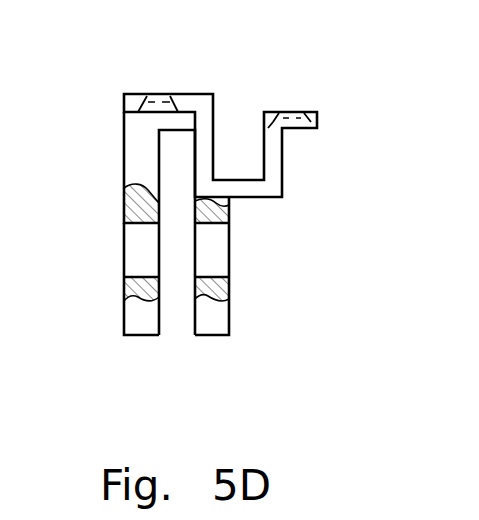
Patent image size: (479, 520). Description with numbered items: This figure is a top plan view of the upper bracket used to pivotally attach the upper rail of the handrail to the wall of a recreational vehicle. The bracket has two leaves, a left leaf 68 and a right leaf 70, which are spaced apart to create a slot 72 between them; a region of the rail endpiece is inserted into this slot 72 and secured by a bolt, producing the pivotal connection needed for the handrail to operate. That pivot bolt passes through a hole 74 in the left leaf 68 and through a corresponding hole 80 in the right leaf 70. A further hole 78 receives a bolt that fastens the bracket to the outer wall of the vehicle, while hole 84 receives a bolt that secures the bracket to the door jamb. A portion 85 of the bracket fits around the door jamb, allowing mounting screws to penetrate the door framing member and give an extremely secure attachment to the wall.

The left leaf 68 is at (125, 320).
The right leaf 70 is at (230, 320).
The slot 72 is at (180, 331).
The hole 74 is at (125, 247).
The hole 78 is at (158, 94).
The hole 80 is at (230, 248).
The hole 84 is at (287, 112).
The portion of bracket 85 is at (287, 187).